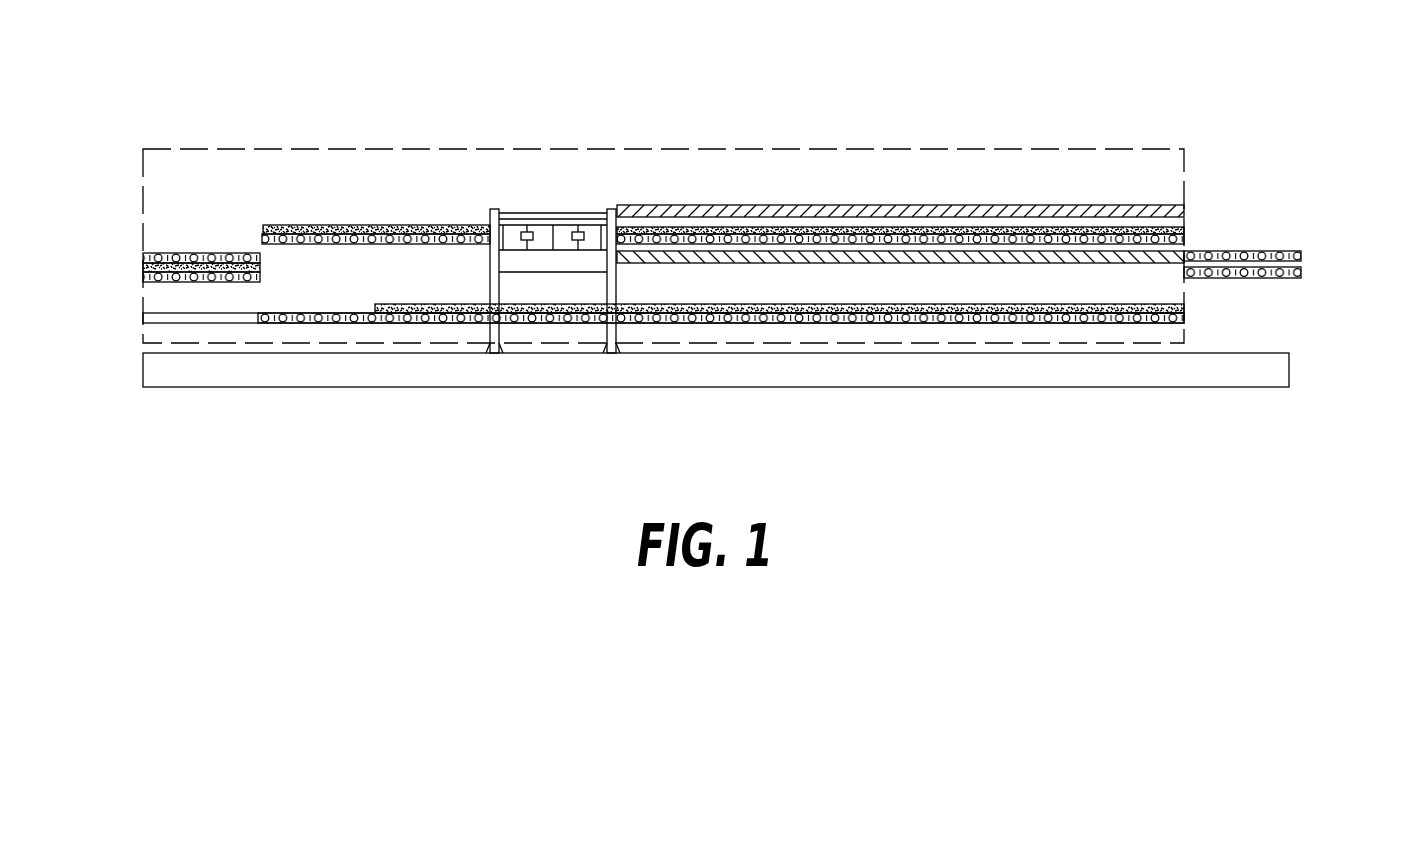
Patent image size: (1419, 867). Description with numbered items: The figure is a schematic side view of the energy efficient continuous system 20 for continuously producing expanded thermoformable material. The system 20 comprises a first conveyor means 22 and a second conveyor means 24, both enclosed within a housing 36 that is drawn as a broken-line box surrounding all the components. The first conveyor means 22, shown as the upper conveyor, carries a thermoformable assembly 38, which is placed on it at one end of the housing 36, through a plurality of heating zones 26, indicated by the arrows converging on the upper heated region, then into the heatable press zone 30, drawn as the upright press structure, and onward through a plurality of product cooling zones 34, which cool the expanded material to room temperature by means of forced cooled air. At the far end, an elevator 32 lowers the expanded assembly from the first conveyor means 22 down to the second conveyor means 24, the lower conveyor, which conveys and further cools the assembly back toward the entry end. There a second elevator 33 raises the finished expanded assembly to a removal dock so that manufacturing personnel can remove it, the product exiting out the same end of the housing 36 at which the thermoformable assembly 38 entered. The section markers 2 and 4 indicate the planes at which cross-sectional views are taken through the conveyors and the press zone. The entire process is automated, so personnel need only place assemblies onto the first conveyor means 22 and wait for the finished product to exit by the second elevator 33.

The energy efficient continuous system 20 is at (714, 86).
The first conveyor means 22 is at (1189, 234).
The second conveyor means 24 is at (667, 329).
The heating zones 26 is at (1112, 199).
The heatable press zone 30 is at (582, 192).
The elevator 32 is at (138, 262).
The second elevator 33 is at (1309, 261).
The product cooling zones 34 is at (303, 216).
The housing 36 is at (1038, 148).
The thermoformable assembly 38 is at (652, 226).
The section line 2 is at (837, 333).
The section line 4 is at (503, 200).